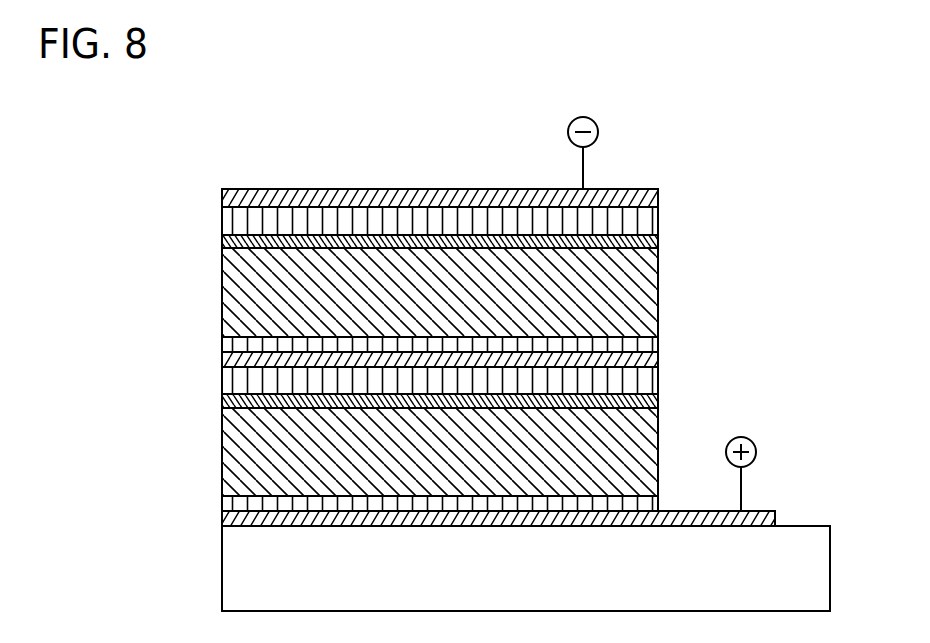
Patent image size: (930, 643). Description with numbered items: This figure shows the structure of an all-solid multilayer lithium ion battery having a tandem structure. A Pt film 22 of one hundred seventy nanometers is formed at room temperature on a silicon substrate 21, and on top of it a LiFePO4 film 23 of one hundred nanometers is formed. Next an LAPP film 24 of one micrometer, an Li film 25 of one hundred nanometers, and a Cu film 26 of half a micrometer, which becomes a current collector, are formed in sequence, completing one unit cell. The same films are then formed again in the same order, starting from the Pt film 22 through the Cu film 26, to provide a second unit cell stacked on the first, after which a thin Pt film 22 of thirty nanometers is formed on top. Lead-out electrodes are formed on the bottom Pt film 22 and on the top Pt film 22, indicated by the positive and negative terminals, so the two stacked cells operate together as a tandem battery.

The silicon substrate 21 is at (232, 586).
The Pt film 22 is at (228, 197).
The LiFePO4 film 23 is at (230, 345).
The LAPP film 24 is at (232, 284).
The Li film 25 is at (230, 242).
The Cu film 26 is at (230, 222).